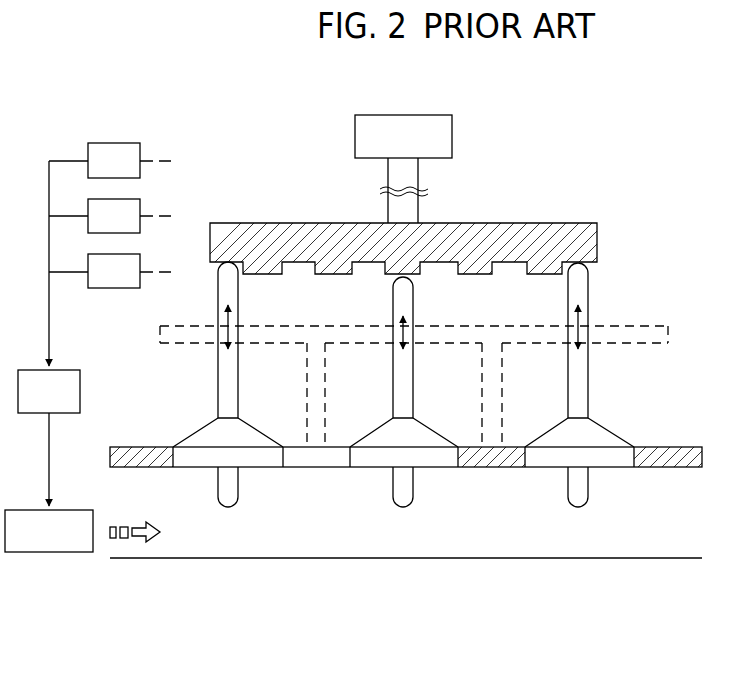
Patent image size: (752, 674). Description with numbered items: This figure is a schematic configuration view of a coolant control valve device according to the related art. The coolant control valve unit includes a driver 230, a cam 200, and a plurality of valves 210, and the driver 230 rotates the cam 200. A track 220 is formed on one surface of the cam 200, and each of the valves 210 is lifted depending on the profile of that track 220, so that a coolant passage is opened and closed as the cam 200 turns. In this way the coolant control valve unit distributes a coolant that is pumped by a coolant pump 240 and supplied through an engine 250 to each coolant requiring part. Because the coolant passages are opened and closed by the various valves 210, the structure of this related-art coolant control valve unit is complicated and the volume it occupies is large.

The cam 200 is at (597, 238).
The valves 210 is at (364, 486).
The track 220 is at (390, 277).
The driver 230 is at (452, 130).
The coolant pump 240 is at (80, 381).
The engine 250 is at (62, 552).